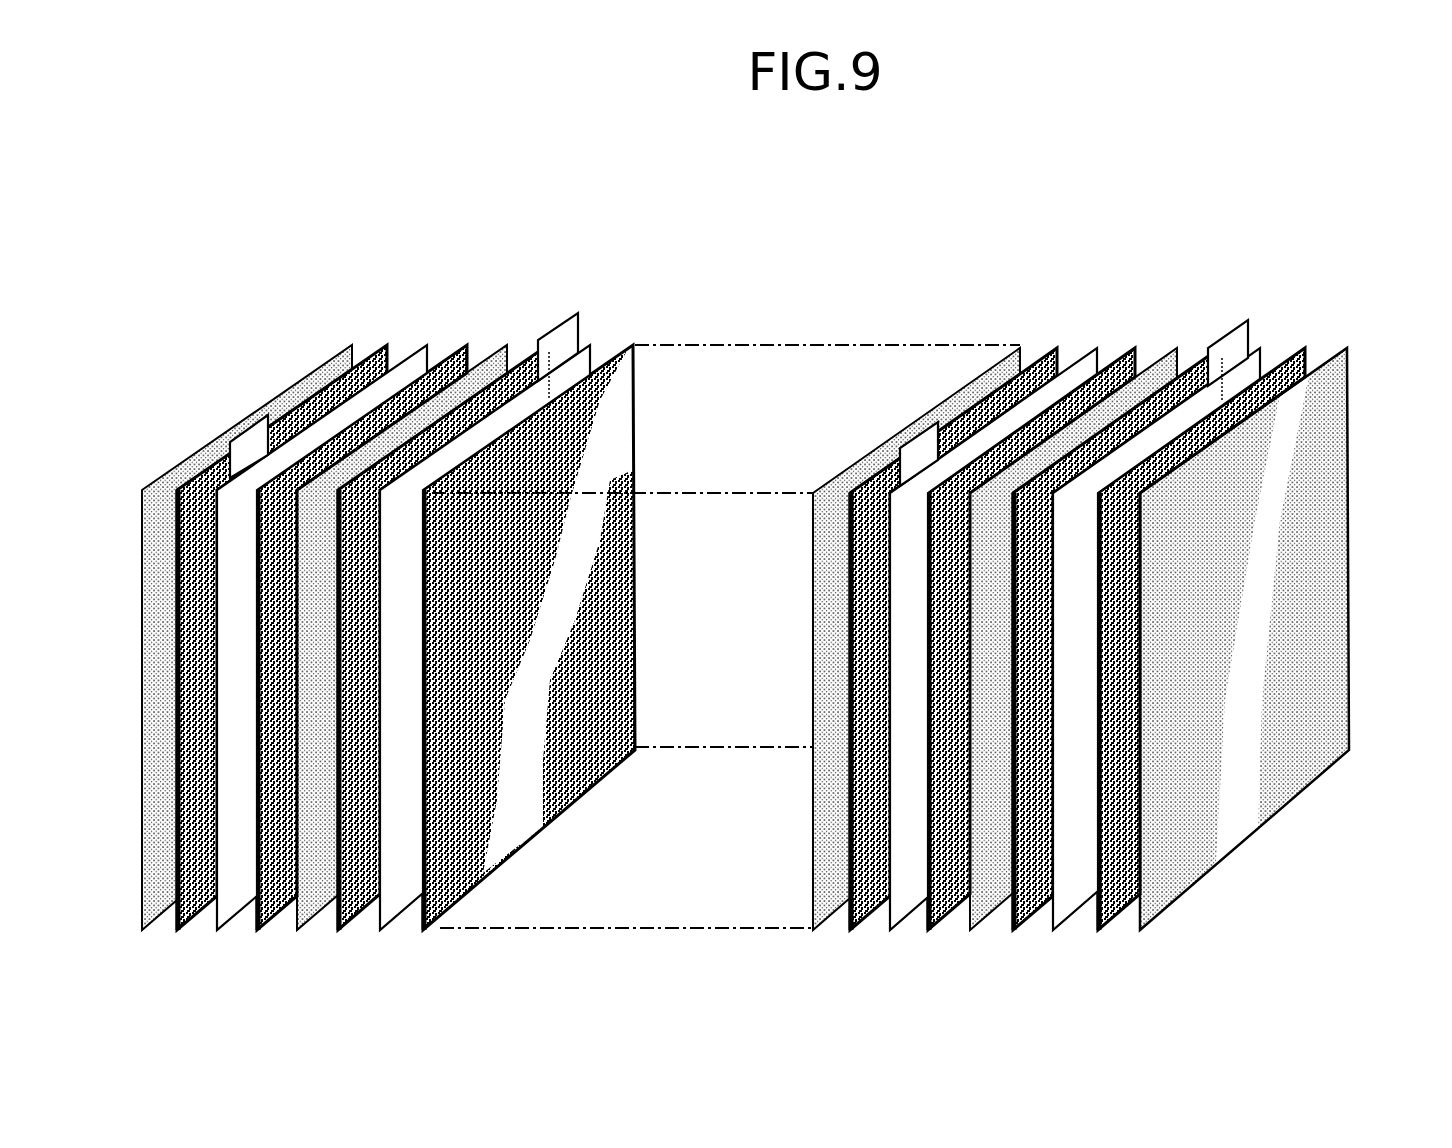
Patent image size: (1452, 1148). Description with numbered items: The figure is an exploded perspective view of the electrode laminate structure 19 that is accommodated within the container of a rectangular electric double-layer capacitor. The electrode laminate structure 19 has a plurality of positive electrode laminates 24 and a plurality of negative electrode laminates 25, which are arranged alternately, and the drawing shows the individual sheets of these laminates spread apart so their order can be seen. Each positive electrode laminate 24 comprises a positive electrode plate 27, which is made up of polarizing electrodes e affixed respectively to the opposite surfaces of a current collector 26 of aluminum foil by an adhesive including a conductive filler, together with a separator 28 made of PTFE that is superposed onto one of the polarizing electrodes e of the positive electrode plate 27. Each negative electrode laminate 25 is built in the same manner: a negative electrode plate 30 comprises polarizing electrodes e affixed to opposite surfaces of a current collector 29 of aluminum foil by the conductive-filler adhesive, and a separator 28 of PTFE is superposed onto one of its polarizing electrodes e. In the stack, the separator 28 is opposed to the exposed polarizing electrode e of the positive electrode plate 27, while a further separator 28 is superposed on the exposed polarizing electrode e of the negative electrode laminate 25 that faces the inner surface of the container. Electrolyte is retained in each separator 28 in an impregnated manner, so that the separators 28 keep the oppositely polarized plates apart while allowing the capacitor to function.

The electrode laminate structure 19 is at (1165, 278).
The positive electrode laminate 24 is at (225, 200).
The negative electrode laminate 25 is at (490, 200).
The current collector 26 is at (425, 343).
The positive electrode plate 27 is at (293, 258).
The separator 28 is at (348, 343).
The current collector 29 is at (588, 343).
The negative electrode plate 30 is at (560, 258).
The polarizing electrode e is at (385, 343).